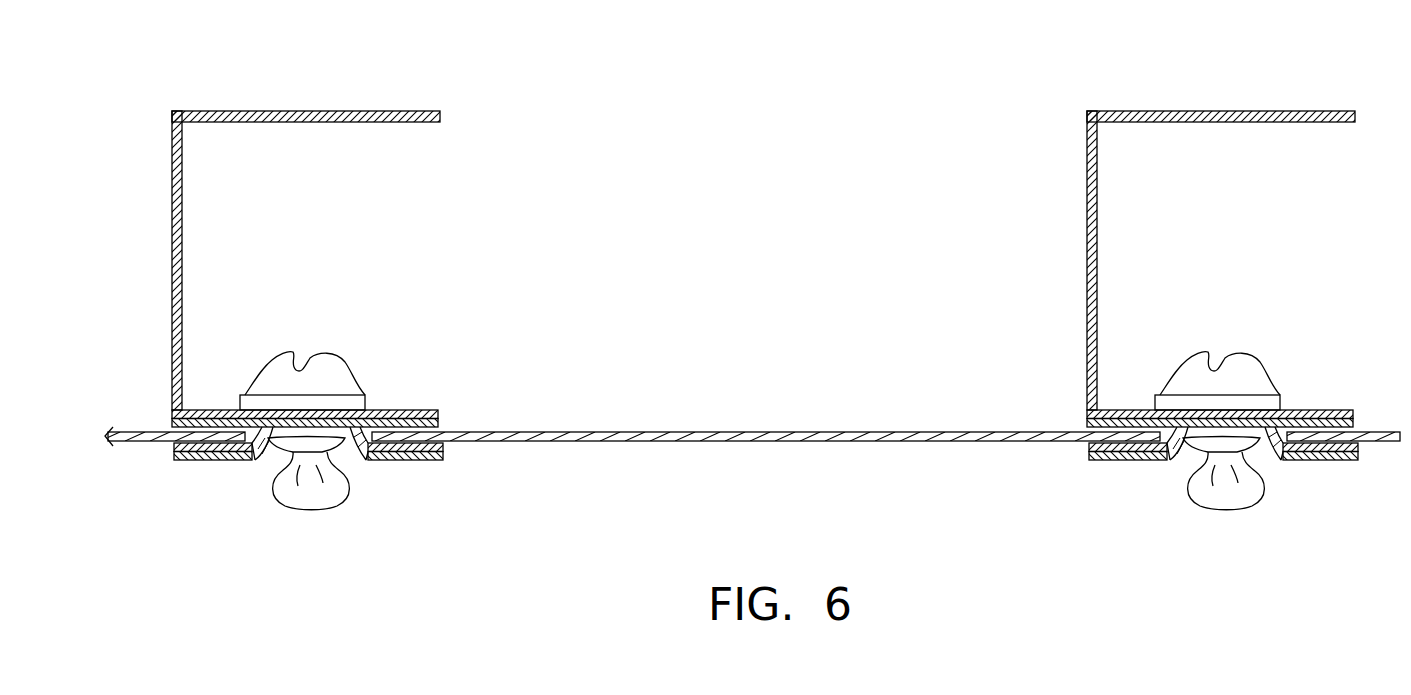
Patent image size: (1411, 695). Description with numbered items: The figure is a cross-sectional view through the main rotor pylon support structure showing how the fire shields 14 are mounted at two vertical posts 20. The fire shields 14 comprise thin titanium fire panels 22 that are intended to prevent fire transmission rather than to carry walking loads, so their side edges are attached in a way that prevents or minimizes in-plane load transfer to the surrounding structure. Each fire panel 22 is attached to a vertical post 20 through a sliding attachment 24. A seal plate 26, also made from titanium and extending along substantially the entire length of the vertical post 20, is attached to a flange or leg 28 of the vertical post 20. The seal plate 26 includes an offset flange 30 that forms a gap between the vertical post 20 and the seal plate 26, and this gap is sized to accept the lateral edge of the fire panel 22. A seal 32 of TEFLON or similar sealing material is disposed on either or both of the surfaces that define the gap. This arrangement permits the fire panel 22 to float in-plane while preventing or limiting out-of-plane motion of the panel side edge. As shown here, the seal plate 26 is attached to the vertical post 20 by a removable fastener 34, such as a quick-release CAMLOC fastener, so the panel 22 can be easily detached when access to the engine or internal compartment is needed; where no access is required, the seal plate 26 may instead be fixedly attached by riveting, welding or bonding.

The fire shields 14 is at (575, 503).
The vertical post 20 is at (320, 111).
The fire panel 22 is at (130, 443).
The sliding attachment 24 is at (275, 536).
The seal plate 26 is at (356, 445).
The flange or leg 28 is at (395, 410).
The offset flange 30 is at (400, 462).
The seal 32 is at (440, 422).
The removable fastener 34 is at (327, 372).